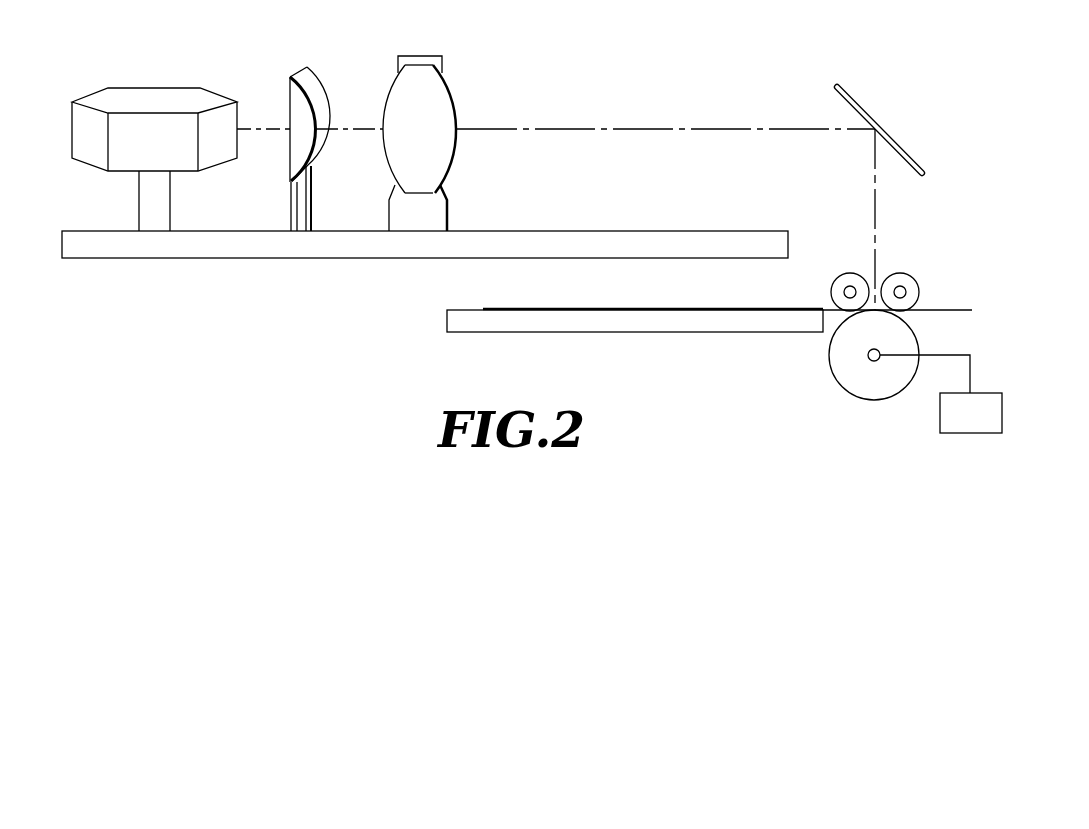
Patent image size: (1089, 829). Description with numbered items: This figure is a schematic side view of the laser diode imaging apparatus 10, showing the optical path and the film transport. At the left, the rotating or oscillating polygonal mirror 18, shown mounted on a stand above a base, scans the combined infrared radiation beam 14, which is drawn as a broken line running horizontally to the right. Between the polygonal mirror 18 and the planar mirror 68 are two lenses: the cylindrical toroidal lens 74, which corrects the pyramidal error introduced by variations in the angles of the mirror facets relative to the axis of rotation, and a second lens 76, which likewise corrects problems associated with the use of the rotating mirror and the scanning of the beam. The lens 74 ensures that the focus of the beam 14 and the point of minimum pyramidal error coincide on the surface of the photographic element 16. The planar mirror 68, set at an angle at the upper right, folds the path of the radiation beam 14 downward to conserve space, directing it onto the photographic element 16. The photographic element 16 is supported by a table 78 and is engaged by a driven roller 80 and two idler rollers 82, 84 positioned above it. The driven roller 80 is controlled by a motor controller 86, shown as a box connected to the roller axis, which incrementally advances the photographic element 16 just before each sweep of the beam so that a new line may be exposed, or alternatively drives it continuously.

The laser diode imaging apparatus 10 is at (917, 107).
The radiation beam 14 is at (675, 128).
The photographic element 16 is at (747, 307).
The polygonal mirror 18 is at (176, 97).
The planar mirror 68 is at (850, 93).
The cylindrical toroidal lens 74 is at (312, 77).
The lens 76 is at (443, 93).
The table 78 is at (677, 327).
The driven roller 80 is at (862, 392).
The idler roller 82 is at (842, 275).
The idler roller 84 is at (915, 282).
The motor controller 86 is at (1002, 417).